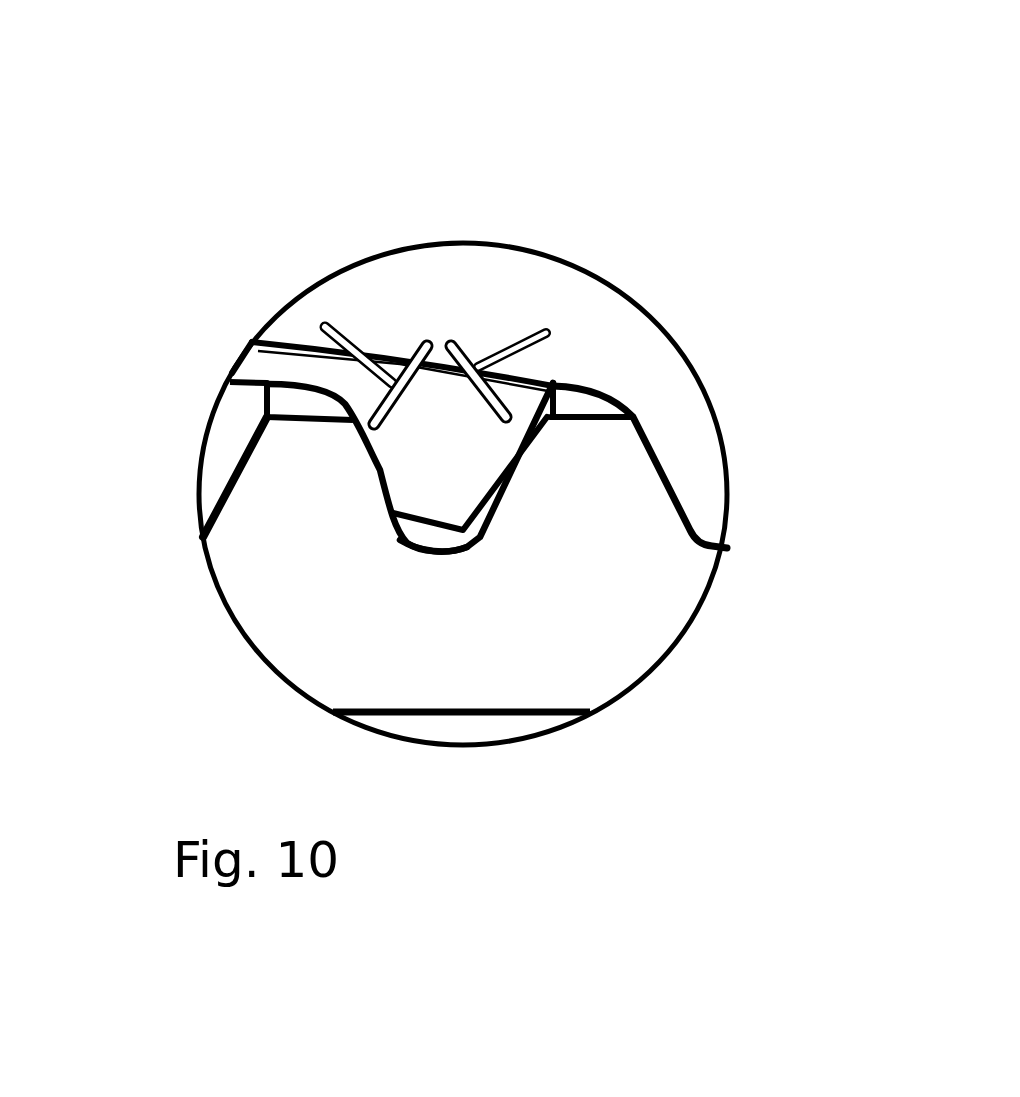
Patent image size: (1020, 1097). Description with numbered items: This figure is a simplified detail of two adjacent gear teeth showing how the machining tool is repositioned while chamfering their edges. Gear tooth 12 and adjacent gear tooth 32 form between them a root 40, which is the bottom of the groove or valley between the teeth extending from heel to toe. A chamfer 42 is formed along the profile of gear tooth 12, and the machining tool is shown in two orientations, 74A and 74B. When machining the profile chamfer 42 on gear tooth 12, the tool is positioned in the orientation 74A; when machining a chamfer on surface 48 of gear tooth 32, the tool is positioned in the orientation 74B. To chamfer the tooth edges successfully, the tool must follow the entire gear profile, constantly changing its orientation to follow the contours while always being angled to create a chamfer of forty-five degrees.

The gear tooth 12 is at (577, 507).
The adjacent gear tooth 32 is at (303, 535).
The root 40 is at (443, 552).
The chamfer 42 is at (507, 487).
The surface of gear tooth 32 48 is at (385, 467).
The machining tool position 74A is at (467, 372).
The machining tool position 74B is at (360, 358).